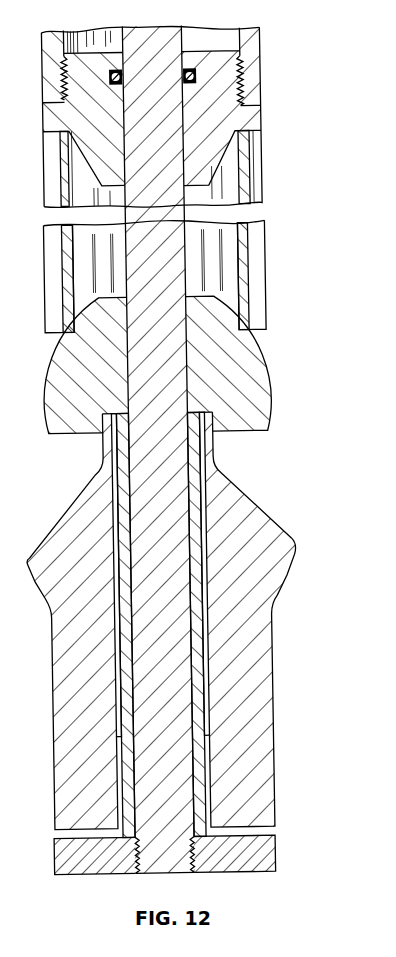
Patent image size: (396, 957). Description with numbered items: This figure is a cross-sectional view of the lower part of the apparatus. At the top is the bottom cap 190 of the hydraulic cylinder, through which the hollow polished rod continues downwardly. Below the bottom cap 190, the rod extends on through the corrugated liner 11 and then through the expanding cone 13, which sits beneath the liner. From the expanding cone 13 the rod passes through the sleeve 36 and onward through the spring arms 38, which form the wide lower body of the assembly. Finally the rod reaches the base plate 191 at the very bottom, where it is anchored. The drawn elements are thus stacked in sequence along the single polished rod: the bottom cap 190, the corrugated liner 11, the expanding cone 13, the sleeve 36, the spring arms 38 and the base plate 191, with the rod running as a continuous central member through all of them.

The bottom cap 190 is at (261, 113).
The corrugated liner 11 is at (265, 258).
The expanding cone 13 is at (260, 368).
The sleeve 36 is at (200, 457).
The spring arms 38 is at (295, 542).
The base plate 191 is at (275, 853).